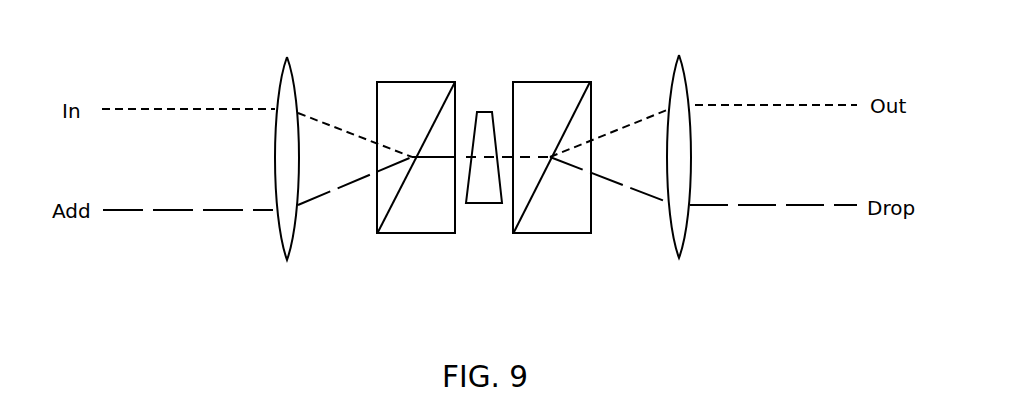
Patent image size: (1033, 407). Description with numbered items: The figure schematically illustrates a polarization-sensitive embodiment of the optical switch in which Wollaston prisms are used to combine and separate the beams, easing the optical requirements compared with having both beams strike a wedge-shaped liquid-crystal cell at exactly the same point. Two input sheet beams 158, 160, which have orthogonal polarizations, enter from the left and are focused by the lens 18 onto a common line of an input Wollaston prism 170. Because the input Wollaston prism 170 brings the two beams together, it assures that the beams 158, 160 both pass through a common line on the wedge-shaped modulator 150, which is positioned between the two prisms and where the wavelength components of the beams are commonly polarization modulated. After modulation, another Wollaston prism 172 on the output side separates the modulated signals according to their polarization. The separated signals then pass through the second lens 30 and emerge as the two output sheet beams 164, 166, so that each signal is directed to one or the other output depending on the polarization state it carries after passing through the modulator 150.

The input sheet beam 158 is at (202, 108).
The input sheet beam 160 is at (165, 212).
The lens 18 is at (288, 235).
The input Wollaston prism 170 is at (417, 225).
The wedge-shaped modulator 150 is at (483, 205).
The output Wollaston prism 172 is at (552, 223).
The second lens 30 is at (678, 79).
The output sheet beam 164 is at (828, 102).
The output sheet beam 166 is at (792, 207).